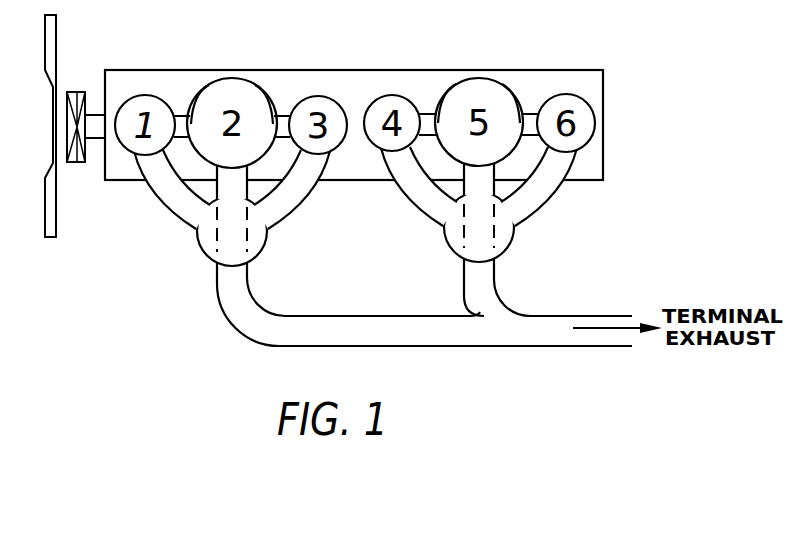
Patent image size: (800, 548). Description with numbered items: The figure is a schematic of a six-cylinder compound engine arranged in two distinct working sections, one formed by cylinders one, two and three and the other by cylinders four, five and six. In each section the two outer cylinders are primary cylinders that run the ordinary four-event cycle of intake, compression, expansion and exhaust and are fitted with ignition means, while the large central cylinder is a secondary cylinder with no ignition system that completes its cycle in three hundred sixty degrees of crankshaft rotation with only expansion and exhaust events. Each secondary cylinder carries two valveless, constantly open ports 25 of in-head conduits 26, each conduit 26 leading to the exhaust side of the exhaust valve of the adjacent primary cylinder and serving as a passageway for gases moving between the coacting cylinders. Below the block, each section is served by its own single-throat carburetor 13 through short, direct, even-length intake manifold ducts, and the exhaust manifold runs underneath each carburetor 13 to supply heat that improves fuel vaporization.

The single-throat carburetor 13 is at (210, 236).
The valveless port 25 is at (210, 83).
The in-head conduit 26 is at (178, 116).